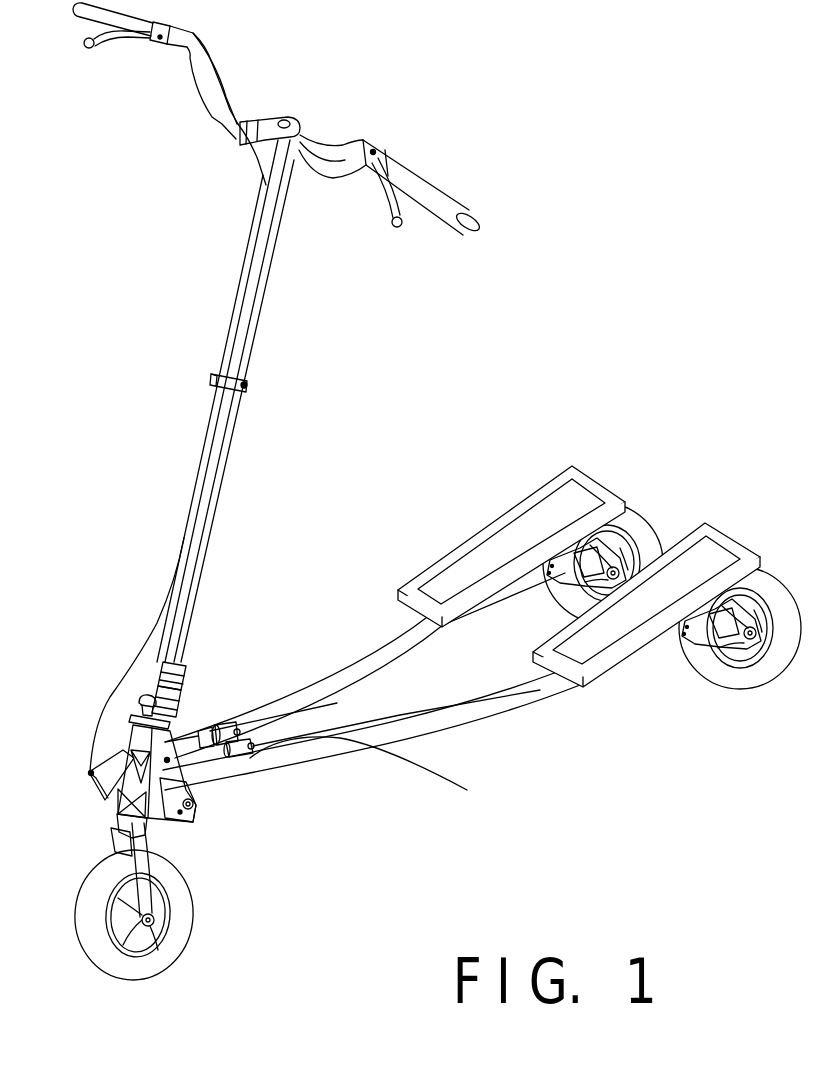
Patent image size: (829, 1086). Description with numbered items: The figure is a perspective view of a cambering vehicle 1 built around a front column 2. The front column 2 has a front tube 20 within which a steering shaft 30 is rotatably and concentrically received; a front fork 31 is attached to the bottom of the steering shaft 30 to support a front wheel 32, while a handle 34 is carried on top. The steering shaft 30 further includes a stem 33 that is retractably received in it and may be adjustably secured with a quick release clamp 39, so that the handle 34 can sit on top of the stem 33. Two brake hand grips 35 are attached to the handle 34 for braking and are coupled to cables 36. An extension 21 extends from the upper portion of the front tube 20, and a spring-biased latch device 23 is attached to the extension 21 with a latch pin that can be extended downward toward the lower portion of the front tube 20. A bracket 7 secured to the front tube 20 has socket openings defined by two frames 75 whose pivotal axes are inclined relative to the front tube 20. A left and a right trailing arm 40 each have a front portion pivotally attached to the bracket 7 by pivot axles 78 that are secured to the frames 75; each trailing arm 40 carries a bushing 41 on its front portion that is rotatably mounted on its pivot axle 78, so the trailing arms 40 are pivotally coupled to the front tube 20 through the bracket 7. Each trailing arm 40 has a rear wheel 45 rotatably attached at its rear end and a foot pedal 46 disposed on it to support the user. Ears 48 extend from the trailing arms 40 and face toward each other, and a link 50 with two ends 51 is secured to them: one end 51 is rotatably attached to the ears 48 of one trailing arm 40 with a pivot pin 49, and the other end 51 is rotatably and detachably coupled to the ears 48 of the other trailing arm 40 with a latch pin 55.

The cambering vehicle 1 is at (93, 355).
The front column 2 is at (101, 612).
The bracket 7 is at (120, 757).
The front tube 20 is at (168, 722).
The extension 21 is at (130, 720).
The spring-biased latch device 23 is at (140, 703).
The steering shaft 30 is at (195, 513).
The front fork 31 is at (147, 865).
The front wheel 32 is at (160, 957).
The stem 33 is at (252, 315).
The handle 34 is at (362, 145).
The brake hand grips 35 is at (113, 44).
The cables 36 is at (223, 80).
The quick release clamp 39 is at (248, 390).
The trailing arms 40 is at (372, 647).
The bushing 41 is at (250, 795).
The rear wheel 45 is at (645, 530).
The foot pedal 46 is at (597, 487).
The ears 48 is at (378, 775).
The pivot pin 49 is at (240, 752).
The link 50 is at (293, 707).
The ends 51 is at (313, 773).
The latch pin 55 is at (255, 725).
The frames 75 is at (90, 772).
The pivot axles 78 is at (193, 807).